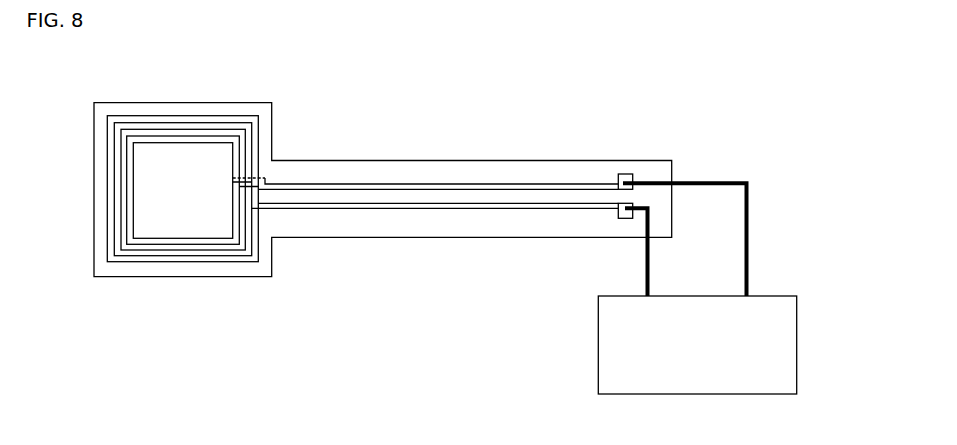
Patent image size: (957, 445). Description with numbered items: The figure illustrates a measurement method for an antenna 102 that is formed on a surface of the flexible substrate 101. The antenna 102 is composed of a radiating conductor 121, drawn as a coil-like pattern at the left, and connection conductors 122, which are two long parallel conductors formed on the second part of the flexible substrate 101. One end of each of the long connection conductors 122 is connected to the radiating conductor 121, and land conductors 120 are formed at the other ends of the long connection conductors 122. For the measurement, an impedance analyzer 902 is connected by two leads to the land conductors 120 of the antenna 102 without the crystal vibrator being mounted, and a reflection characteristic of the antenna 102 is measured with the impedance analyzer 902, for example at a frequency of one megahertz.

The flexible substrate 101 is at (530, 170).
The antenna 102 is at (338, 284).
The land conductors 120 is at (624, 217).
The radiating conductor 121 is at (257, 261).
The connection conductors 122 is at (382, 207).
The impedance analyzer 902 is at (770, 294).